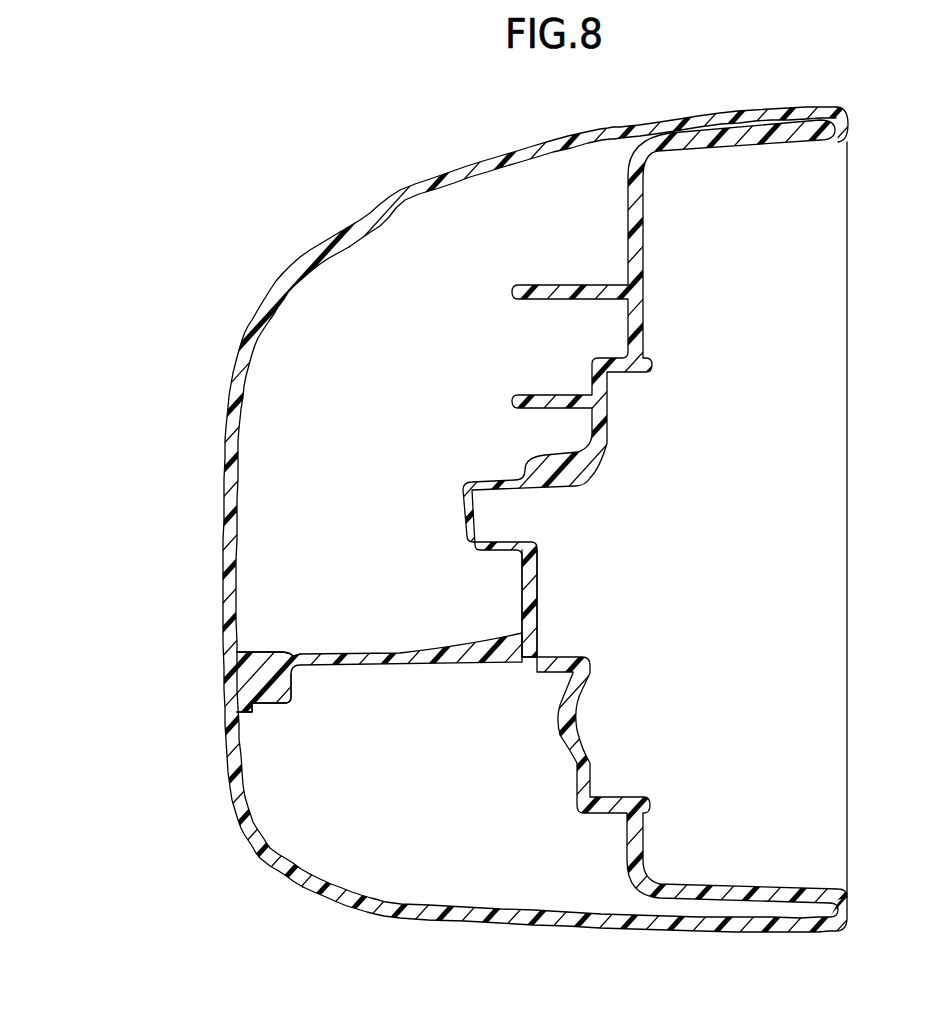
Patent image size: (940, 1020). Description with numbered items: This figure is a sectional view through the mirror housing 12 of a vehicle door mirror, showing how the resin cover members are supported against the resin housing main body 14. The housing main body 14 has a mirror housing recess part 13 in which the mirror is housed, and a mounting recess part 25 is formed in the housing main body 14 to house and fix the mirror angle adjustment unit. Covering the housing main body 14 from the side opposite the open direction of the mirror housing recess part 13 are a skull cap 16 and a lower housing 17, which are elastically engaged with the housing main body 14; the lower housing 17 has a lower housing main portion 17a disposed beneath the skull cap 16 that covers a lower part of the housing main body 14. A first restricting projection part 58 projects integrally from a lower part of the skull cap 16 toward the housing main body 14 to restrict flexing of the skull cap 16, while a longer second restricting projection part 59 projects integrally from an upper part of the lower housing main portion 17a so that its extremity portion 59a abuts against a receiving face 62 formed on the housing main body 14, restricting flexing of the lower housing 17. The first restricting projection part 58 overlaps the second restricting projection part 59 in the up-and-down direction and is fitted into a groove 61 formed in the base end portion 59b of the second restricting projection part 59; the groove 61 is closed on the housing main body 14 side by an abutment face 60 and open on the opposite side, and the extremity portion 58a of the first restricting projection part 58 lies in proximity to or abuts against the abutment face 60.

The mirror housing 12 is at (470, 510).
The mirror housing recess part 13 is at (783, 150).
The housing main body 14 is at (649, 391).
The skull cap 16 is at (398, 198).
The lower housing 17 is at (505, 885).
The lower housing main portion 17a is at (385, 898).
The mounting recess part 25 is at (632, 800).
The first restricting projection part 58 is at (248, 655).
The extremity portion of the first restricting projection part 58a is at (272, 660).
The second restricting projection part 59 is at (337, 678).
The extremity portion of the second restricting projection part 59a is at (522, 645).
The base end portion of the second restricting projection part 59b is at (270, 712).
The abutment face 60 is at (282, 670).
The groove 61 is at (240, 678).
The receiving face 62 is at (525, 668).